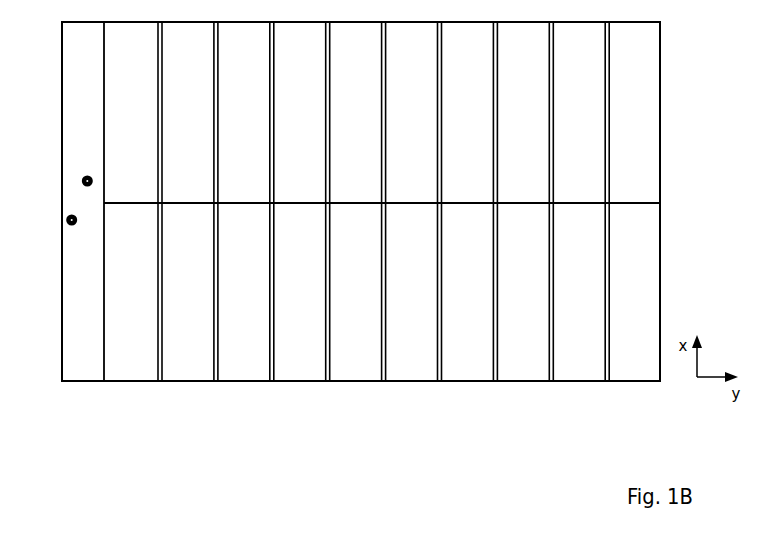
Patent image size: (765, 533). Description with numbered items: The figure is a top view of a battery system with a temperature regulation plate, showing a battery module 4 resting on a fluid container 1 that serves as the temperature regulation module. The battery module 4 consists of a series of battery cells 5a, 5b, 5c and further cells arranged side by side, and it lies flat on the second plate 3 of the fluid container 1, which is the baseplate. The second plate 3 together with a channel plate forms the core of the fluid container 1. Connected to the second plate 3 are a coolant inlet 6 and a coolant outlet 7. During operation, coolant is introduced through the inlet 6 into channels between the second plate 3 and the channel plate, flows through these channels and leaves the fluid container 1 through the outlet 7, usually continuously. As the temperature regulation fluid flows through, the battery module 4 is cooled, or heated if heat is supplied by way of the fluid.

The fluid container 1 is at (82, 364).
The second plate 3 is at (89, 357).
The battery module 4 is at (643, 104).
The battery cell 5a is at (114, 124).
The battery cell 5b is at (177, 124).
The battery cell 5c is at (230, 124).
The coolant inlet 6 is at (67, 223).
The coolant outlet 7 is at (82, 179).